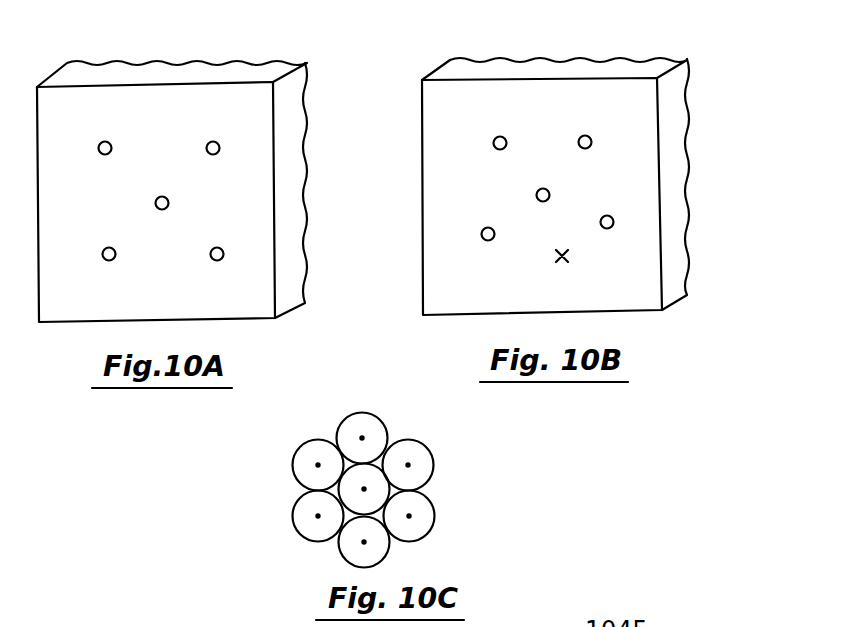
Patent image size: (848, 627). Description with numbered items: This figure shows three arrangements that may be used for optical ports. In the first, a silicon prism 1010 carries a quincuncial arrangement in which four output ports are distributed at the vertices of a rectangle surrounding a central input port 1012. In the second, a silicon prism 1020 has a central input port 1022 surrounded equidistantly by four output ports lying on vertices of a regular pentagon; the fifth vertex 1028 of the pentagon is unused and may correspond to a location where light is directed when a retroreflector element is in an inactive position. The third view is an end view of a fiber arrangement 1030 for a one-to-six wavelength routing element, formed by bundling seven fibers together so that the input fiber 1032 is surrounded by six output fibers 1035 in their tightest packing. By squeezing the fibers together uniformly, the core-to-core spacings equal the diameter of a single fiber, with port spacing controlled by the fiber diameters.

In FIG. 10A, the silicon prism 1010 is at (255, 82).
In FIG. 10A, the central input port 1012 is at (168, 202).
In FIG. 10B, the silicon prism 1020 is at (628, 76).
In FIG. 10B, the central input port 1022 is at (562, 182).
In FIG. 10B, the fifth vertex 1028 is at (565, 261).
In FIG. 10C, the fiber arrangement 1030 is at (411, 501).
In FIG. 10C, the input fiber 1032 is at (335, 537).
In FIG. 10C, the output fibers 1035 is at (432, 528).